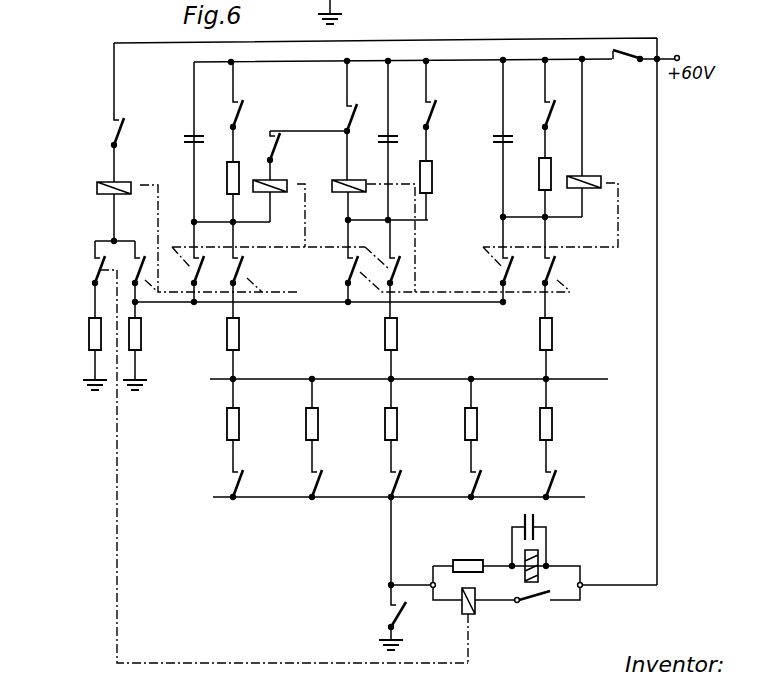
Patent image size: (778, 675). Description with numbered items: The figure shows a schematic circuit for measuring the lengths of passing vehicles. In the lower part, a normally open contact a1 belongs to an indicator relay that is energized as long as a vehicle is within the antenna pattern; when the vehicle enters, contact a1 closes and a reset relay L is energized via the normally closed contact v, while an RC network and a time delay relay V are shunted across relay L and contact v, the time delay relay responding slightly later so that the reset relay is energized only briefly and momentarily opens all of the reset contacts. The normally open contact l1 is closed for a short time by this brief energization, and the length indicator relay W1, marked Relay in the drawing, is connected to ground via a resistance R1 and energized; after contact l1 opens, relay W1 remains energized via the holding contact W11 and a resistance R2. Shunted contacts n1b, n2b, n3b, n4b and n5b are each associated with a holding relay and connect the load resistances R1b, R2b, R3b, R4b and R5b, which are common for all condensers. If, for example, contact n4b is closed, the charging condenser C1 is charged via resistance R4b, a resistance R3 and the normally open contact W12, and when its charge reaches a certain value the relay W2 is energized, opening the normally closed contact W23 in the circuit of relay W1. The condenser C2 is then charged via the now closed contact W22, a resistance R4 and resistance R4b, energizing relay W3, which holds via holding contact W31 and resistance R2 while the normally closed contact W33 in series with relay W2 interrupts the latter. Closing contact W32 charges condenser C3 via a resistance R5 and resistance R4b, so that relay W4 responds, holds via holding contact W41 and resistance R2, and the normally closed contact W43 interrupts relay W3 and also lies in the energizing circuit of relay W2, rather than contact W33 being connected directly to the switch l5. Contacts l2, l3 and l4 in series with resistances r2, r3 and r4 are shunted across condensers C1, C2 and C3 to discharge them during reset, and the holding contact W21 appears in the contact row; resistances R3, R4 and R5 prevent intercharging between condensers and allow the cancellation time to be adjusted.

The normally closed contact W23 is at (102, 129).
The length indicator relay W1 is at (129, 194).
The length indicator relay Relay is at (97, 187).
The normally open contact l1 is at (90, 266).
The holding contact W11 is at (153, 268).
The resistance R1 is at (88, 336).
The resistance R2 is at (143, 336).
The charging condenser C1 is at (182, 143).
The contact l2 is at (242, 95).
The resistance r2 is at (223, 174).
The holding contact W21 is at (212, 263).
The normally open contact W12 is at (251, 255).
The resistance R3 is at (245, 345).
The normally closed contact W33 is at (307, 148).
The length indicator relay W2 is at (275, 191).
The normally closed contact W43 is at (336, 97).
The length indicator relay W3 is at (354, 176).
The charging condenser C2 is at (377, 141).
The contact l3 is at (438, 95).
The resistance r3 is at (435, 173).
The holding contact W31 is at (338, 262).
The normally open contact W22 is at (409, 254).
The resistance R4 is at (404, 345).
The charging condenser C3 is at (492, 139).
The contact l4 is at (555, 94).
The resistance r4 is at (535, 173).
The length indicator relay W4 is at (592, 140).
The holding contact W41 is at (494, 260).
The contact W32 is at (564, 252).
The resistance R5 is at (559, 345).
The switch l5 is at (646, 70).
The load resistance R1b is at (248, 435).
The shunted contact n1b is at (249, 480).
The load resistance R2b is at (326, 419).
The shunted contact n2b is at (328, 480).
The load resistance R3b is at (406, 435).
The shunted contact n3b is at (407, 480).
The load resistance R4b is at (485, 419).
The normally open contact n4b is at (487, 480).
The load resistance R5b is at (562, 435).
The shunted contact n5b is at (563, 480).
The time delay relay V is at (536, 562).
The reset relay L is at (489, 608).
The normally closed contact v is at (532, 604).
The normally open contact a1 is at (391, 625).